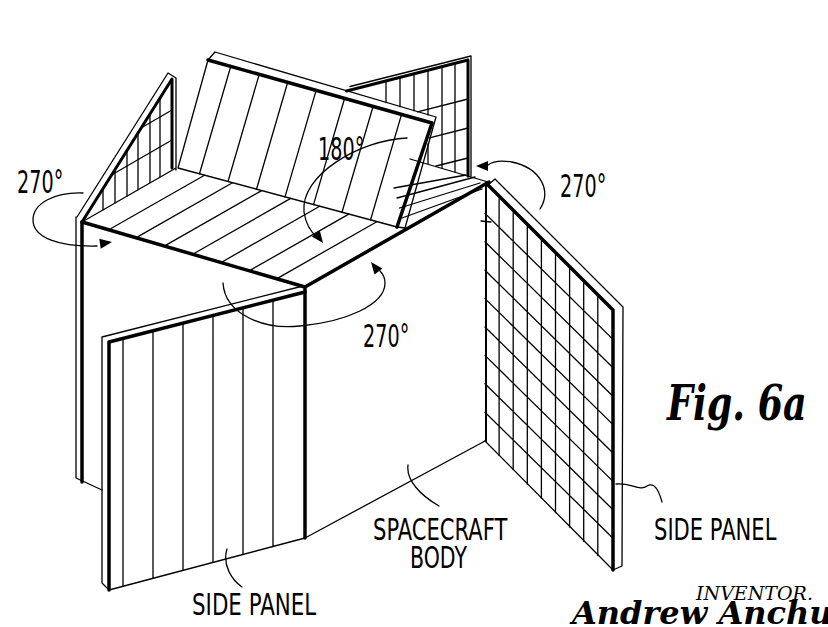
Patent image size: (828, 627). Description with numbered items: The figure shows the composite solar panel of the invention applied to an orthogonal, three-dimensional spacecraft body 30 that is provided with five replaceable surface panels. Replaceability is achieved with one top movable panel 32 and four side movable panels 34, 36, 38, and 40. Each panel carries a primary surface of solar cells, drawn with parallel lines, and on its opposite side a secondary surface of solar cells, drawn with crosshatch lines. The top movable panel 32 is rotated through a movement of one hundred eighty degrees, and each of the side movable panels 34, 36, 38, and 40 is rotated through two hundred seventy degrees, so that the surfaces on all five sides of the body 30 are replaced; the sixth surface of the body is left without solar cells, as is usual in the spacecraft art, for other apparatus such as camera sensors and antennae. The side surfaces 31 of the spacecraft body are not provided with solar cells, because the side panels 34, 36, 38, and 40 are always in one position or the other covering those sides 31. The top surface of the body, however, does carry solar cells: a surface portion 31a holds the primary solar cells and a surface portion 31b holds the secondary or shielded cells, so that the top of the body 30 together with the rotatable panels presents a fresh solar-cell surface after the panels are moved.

The orthogonal three-dimensional body 30 is at (447, 383).
The surfaces of the body 31 is at (97, 293).
The surface portion for primary solar cells 31a is at (220, 235).
The surface portion for secondary solar cells 31b is at (453, 188).
The top movable panel 32 is at (283, 79).
The side movable panel 34 is at (592, 277).
The side movable panel 36 is at (104, 536).
The side movable panel 38 is at (144, 111).
The side movable panel 40 is at (426, 70).